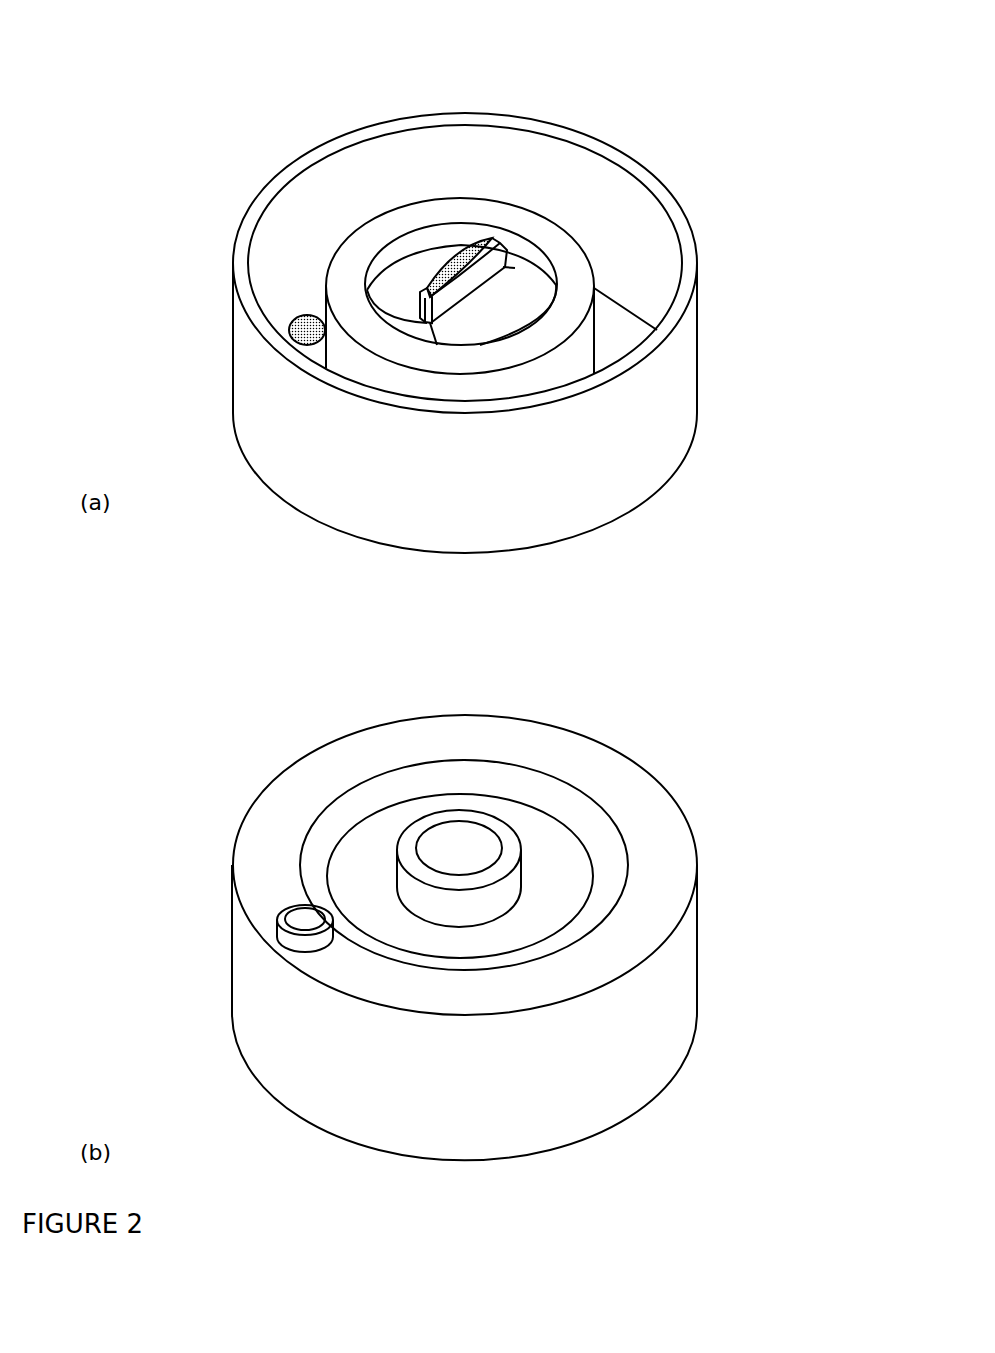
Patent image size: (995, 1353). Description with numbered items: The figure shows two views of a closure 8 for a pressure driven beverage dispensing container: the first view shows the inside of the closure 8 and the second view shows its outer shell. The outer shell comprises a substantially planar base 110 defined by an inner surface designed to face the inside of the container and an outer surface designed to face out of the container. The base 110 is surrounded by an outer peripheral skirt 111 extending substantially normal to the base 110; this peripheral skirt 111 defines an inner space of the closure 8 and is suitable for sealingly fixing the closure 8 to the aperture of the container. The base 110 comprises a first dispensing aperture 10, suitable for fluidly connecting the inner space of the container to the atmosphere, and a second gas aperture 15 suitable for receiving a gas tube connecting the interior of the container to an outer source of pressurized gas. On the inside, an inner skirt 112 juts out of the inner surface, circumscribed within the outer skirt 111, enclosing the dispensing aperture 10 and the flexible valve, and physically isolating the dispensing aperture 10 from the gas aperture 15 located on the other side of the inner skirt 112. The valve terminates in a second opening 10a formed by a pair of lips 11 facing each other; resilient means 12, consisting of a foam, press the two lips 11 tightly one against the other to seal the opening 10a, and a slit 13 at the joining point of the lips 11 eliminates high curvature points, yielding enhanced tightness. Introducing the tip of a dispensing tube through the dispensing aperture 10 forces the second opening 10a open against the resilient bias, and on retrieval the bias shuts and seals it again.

The closure 8 is at (238, 213).
The first dispensing aperture 10 is at (465, 855).
The second opening 10a is at (416, 190).
The lips 11 is at (423, 288).
The resilient means 12 is at (507, 302).
The slit 13 is at (422, 302).
The second gas aperture 15 is at (300, 332).
The base 110 is at (612, 322).
The outer peripheral skirt 111 is at (628, 430).
The inner skirt 112 is at (443, 212).